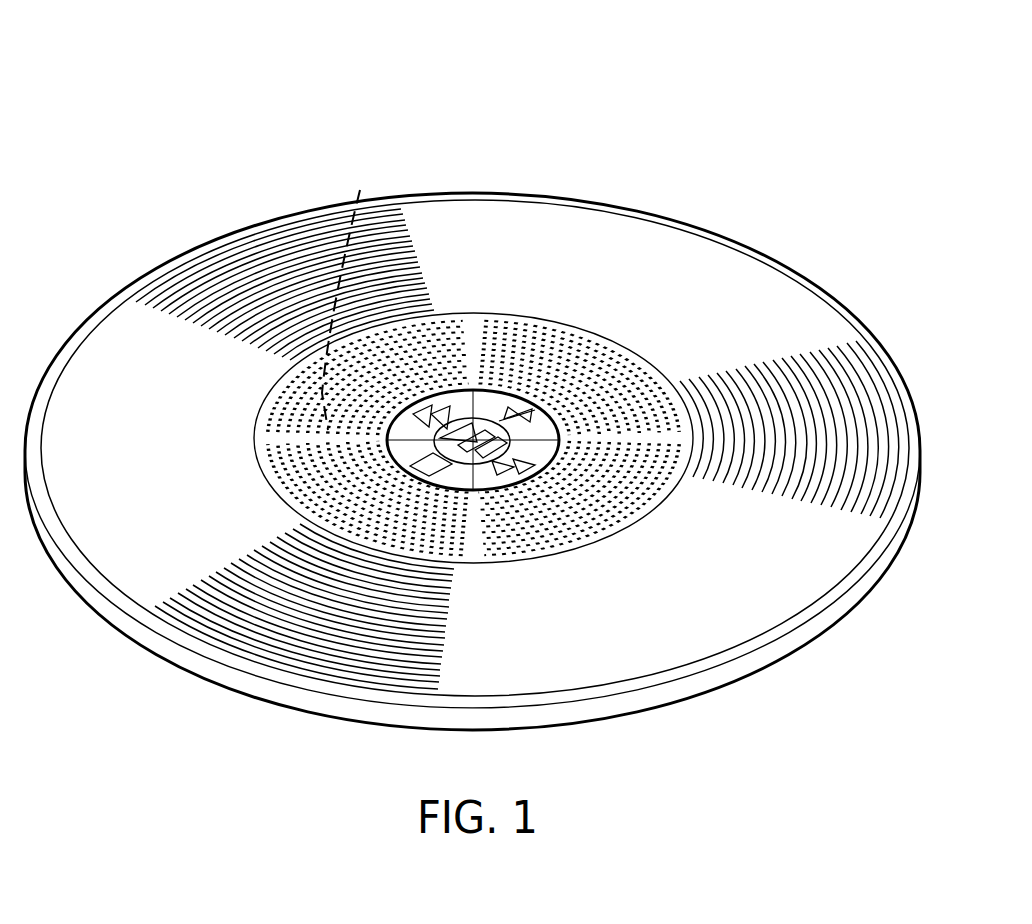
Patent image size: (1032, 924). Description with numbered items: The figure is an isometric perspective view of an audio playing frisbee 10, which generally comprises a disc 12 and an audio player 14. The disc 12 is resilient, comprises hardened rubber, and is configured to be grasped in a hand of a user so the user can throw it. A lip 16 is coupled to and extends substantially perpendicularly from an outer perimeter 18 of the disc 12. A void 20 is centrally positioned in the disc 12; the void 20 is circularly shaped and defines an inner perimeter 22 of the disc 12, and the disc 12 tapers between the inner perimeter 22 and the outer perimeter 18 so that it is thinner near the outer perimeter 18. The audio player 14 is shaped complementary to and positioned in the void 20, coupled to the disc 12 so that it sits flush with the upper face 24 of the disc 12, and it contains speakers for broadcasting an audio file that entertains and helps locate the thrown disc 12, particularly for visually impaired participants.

The audio playing frisbee 10 is at (528, 79).
The disc 12 is at (503, 220).
The audio player 14 is at (437, 400).
The lip 16 is at (755, 665).
The outer perimeter 18 is at (662, 217).
The void 20 is at (473, 337).
The inner perimeter 22 is at (633, 348).
The upper face 24 is at (697, 604).